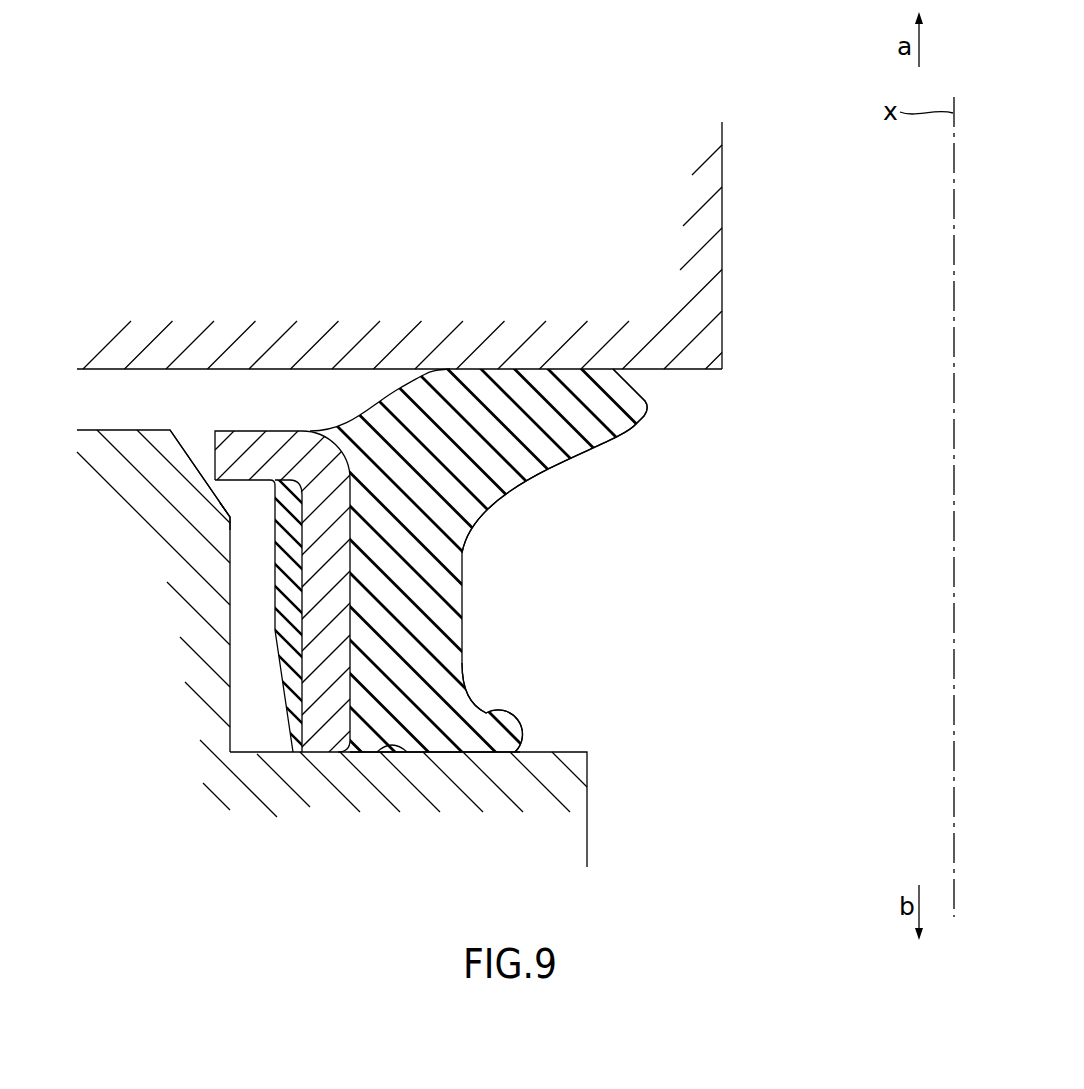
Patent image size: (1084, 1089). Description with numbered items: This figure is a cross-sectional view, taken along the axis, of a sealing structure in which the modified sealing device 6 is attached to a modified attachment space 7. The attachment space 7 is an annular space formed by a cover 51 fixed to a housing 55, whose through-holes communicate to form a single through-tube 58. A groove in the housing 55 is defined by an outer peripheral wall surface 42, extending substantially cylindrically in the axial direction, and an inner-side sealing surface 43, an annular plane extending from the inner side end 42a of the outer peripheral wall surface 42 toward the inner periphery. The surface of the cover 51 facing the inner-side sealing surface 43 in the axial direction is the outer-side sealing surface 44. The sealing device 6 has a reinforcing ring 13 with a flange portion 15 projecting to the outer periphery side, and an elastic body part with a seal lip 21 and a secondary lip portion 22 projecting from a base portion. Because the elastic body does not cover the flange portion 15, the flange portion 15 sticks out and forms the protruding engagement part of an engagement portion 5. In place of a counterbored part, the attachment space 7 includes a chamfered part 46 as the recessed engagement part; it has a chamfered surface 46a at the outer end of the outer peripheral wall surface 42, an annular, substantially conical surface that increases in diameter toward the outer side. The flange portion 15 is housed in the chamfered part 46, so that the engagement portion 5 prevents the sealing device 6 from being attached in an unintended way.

The cover 51 is at (612, 156).
The outer-side sealing surface 44 is at (368, 374).
The engagement portion 5 is at (200, 585).
The chamfered part 46 is at (197, 438).
The flange portion 15 is at (237, 452).
The sealing device 6 is at (657, 410).
The seal lip 21 is at (585, 425).
The attachment space 7 is at (520, 590).
The secondary lip portion 22 is at (487, 727).
The through-tube 58 is at (883, 547).
The inner side end 42a is at (188, 462).
The chamfered surface 46a is at (195, 458).
The outer peripheral wall surface 42 is at (240, 590).
The housing 55 is at (205, 763).
The reinforcing ring 13 is at (360, 702).
The inner-side sealing surface 43 is at (486, 752).